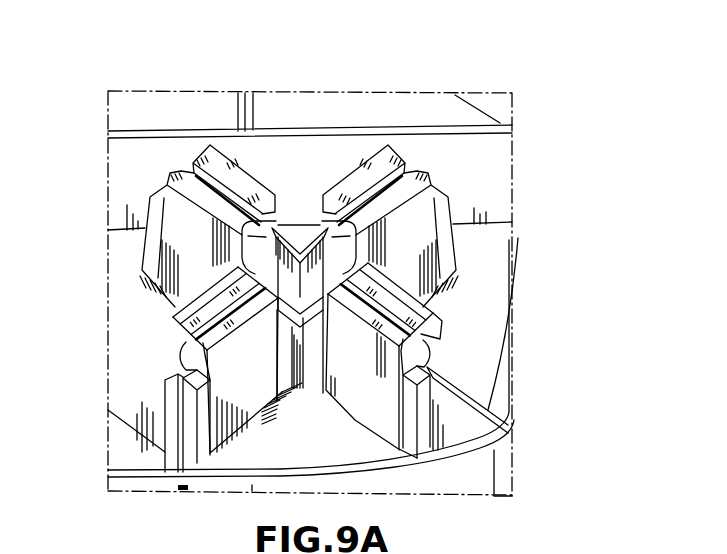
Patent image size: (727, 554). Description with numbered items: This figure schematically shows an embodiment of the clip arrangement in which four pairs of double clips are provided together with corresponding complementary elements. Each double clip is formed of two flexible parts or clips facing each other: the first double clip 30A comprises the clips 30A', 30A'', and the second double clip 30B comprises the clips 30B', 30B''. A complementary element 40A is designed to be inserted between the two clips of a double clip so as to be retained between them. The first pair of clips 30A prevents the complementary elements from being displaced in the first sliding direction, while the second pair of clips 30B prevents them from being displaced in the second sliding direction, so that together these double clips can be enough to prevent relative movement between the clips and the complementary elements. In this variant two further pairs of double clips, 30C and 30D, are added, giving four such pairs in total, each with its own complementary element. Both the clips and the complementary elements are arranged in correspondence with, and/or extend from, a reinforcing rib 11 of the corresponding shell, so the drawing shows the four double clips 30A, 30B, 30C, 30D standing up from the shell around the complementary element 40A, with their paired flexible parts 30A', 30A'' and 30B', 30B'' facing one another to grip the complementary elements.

The reinforcing rib 11 is at (477, 423).
The complementary element 40A is at (310, 322).
The first pair of clips 30A is at (157, 355).
The flexible part 30A' is at (111, 423).
The flexible part 30A'' is at (124, 400).
The second pair of clips 30B is at (454, 359).
The flexible part 30B' is at (507, 390).
The flexible part 30B'' is at (497, 389).
The third pair of clips 30C is at (370, 160).
The fourth pair of clips 30D is at (192, 160).